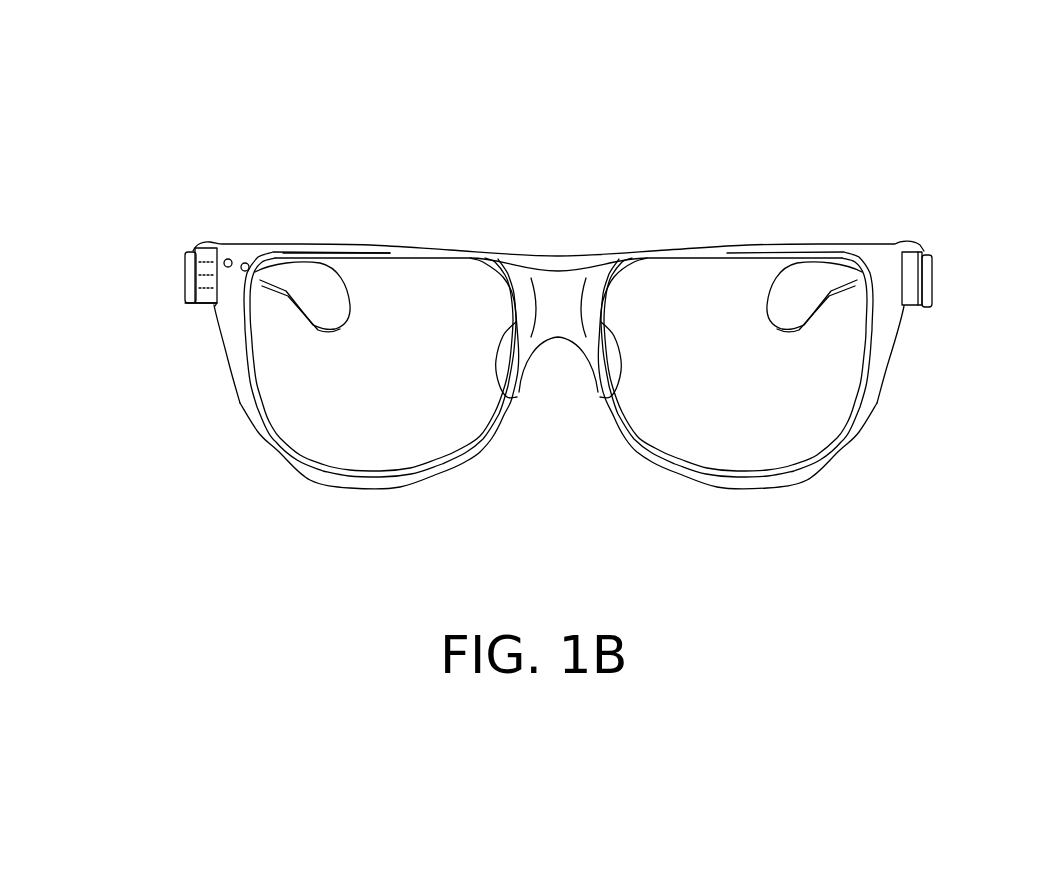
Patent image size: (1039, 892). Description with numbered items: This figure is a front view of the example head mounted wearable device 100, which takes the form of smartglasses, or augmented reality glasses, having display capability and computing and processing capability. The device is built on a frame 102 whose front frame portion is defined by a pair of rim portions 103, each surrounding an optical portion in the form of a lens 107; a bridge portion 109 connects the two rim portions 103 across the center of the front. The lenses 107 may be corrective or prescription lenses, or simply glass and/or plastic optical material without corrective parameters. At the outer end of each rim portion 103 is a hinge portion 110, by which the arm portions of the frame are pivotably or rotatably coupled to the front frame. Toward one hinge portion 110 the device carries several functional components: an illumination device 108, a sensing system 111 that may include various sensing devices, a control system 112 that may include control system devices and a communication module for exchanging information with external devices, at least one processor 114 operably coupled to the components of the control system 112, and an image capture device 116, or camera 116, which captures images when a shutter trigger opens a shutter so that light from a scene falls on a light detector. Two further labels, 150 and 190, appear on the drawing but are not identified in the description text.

The head mounted wearable device 100 is at (82, 168).
The frame 102 is at (792, 232).
The rim portions 103 is at (238, 401).
The lenses 107 is at (347, 423).
The illumination device 108 is at (234, 256).
The bridge portion 109 is at (555, 288).
The hinge portions 110 is at (193, 234).
The sensing system 111 is at (187, 256).
The control system 112 is at (188, 280).
The processor 114 is at (190, 305).
The image capture device 116 is at (248, 260).
The sensor 150 is at (378, 246).
The end piece 190 is at (188, 348).